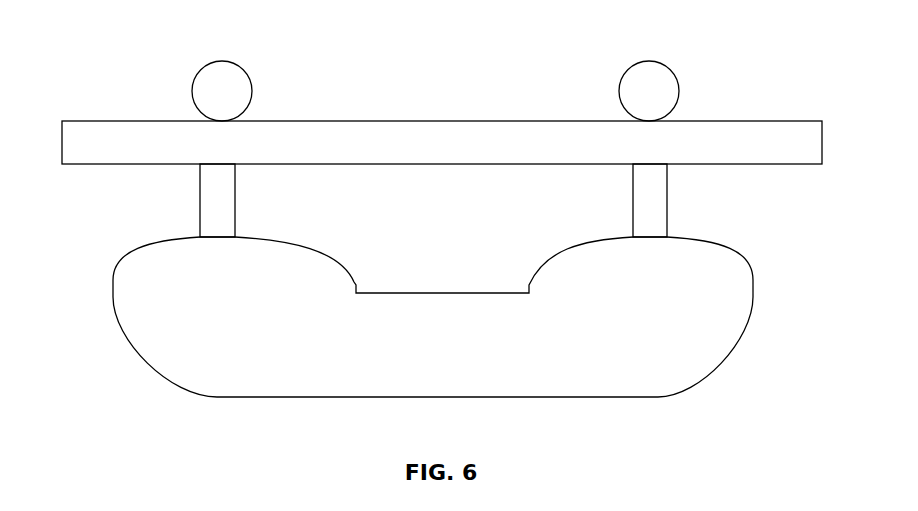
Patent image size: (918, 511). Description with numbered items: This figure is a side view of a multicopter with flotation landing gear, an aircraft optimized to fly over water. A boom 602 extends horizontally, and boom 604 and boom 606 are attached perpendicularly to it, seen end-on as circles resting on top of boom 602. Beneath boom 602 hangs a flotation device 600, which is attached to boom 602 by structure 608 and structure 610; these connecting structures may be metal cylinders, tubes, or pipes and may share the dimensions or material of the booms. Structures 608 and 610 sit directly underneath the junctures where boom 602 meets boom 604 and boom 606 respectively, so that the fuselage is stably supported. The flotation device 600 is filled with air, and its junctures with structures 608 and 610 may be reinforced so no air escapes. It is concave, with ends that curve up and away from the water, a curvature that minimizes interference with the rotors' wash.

The flotation device 600 is at (128, 336).
The boom 602 is at (62, 142).
The boom 604 is at (222, 61).
The boom 606 is at (649, 61).
The structure 608 is at (200, 201).
The structure 610 is at (633, 201).